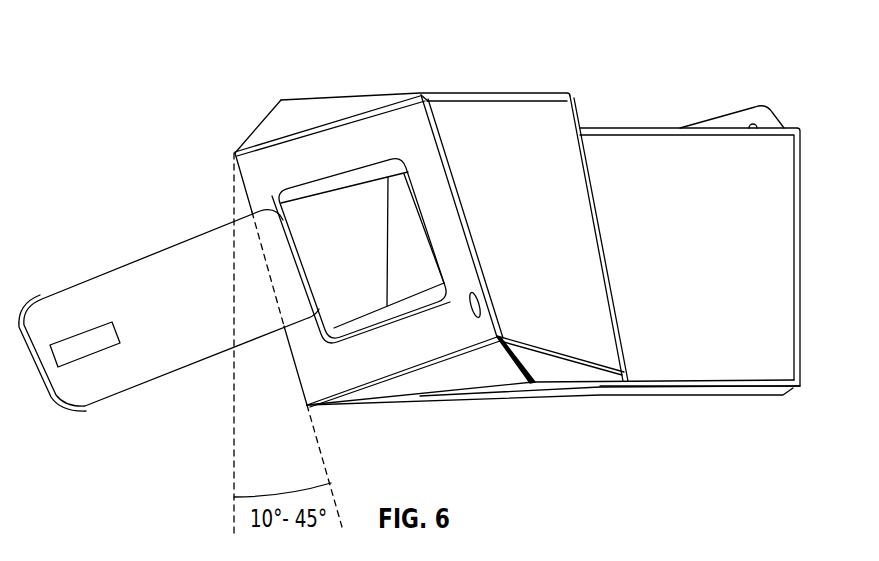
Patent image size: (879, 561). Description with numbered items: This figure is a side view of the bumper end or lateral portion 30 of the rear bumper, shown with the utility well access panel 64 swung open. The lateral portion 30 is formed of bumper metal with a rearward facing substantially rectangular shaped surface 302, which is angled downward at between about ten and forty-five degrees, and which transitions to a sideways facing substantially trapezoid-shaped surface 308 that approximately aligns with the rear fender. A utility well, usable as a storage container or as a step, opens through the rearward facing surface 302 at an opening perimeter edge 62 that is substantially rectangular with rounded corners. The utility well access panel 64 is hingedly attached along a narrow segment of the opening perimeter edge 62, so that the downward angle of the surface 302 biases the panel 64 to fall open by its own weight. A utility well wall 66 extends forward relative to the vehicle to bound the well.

The bumper lateral or end portion 30 is at (649, 38).
The rearward facing substantially rectangular shaped surface 302 is at (351, 138).
The opening perimeter edge 62 is at (417, 320).
The utility well access panel 64 is at (152, 360).
The utility well wall 66 is at (777, 223).
The sideways facing substantially trapezoid-shaped surface 308 is at (555, 391).